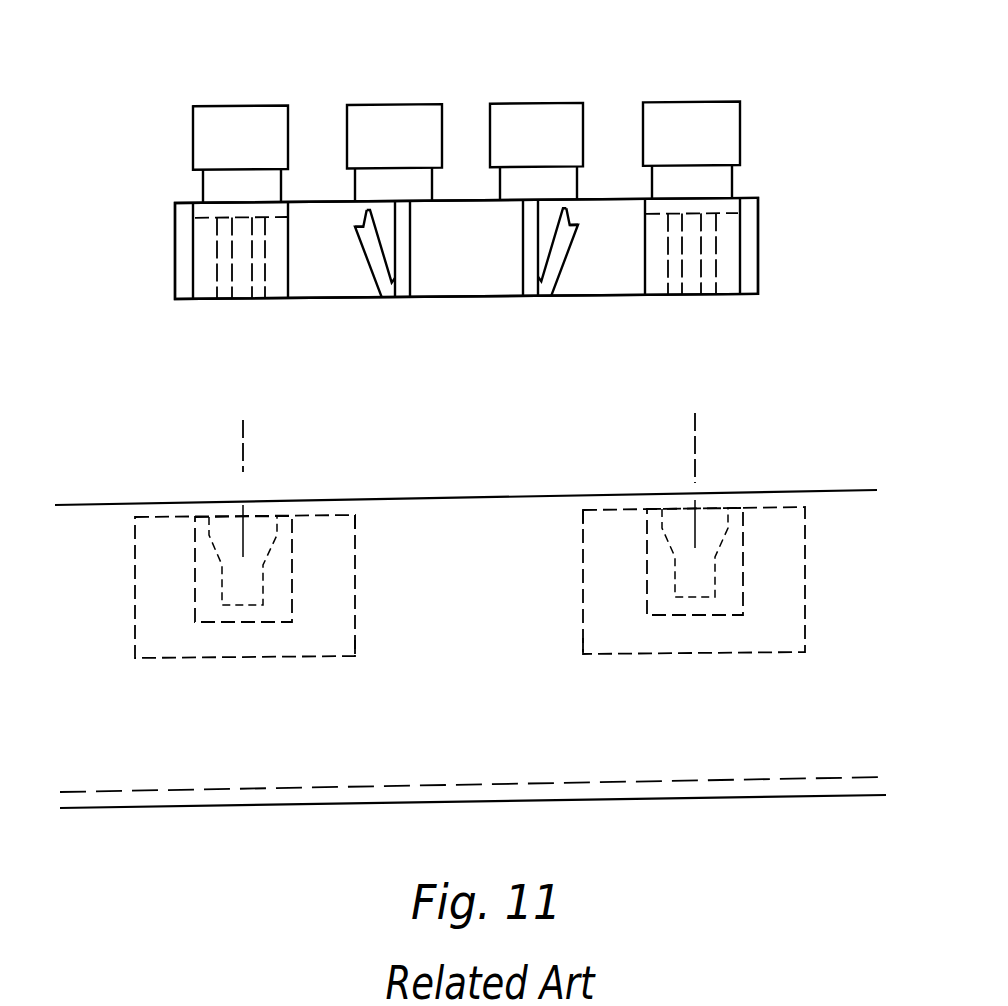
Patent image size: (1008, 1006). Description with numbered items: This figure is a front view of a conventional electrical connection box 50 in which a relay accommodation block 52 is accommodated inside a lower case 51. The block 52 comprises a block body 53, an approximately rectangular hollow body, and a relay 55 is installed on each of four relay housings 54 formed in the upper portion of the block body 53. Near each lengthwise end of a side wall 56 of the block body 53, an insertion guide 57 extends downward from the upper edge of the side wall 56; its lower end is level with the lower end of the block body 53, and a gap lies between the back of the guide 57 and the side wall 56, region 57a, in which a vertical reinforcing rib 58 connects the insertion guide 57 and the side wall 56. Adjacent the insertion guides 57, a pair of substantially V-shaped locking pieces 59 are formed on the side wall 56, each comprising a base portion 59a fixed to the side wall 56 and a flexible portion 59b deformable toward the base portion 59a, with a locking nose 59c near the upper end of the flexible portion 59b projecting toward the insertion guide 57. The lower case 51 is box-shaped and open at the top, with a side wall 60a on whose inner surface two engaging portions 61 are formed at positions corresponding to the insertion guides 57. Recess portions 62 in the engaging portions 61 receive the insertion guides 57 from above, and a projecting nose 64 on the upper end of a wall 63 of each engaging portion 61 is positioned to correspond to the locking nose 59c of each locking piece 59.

The electrical connection box 50 is at (767, 85).
The lower case 51 is at (808, 485).
The relay accommodation block 52 is at (792, 198).
The block body 53 is at (760, 210).
The relay housing 54 is at (207, 188).
The relay 55 is at (215, 112).
The side wall 56 is at (452, 282).
The insertion guide 57 is at (283, 280).
The fixing block top surface 57a is at (200, 222).
The reinforcing rib 58 is at (262, 297).
The locking piece 59 is at (392, 302).
The base portion 59a is at (402, 255).
The flexible portion 59b is at (366, 252).
The locking nose 59c is at (357, 226).
The side wall 60a is at (640, 763).
The engaging portion 61 is at (167, 652).
The recess portion 62 is at (263, 522).
The wall 63 is at (357, 640).
The projecting nose 64 is at (377, 515).